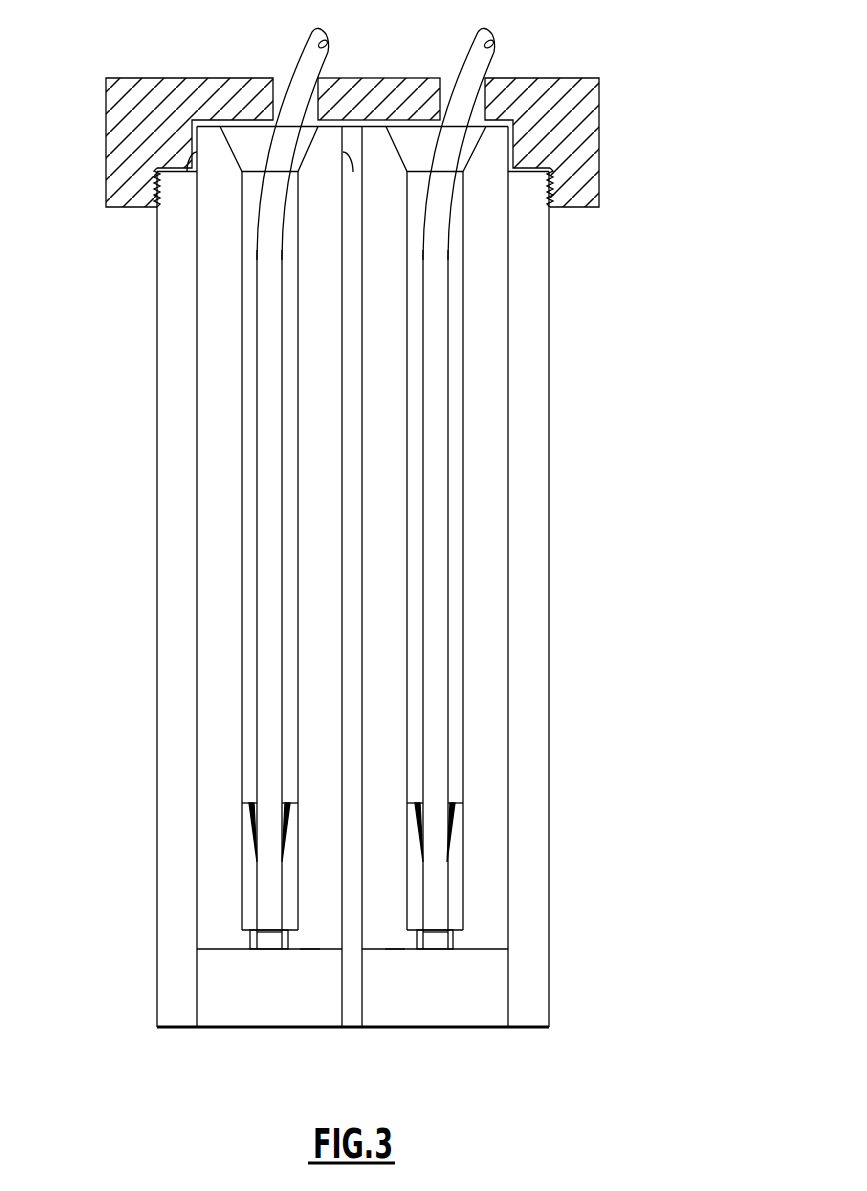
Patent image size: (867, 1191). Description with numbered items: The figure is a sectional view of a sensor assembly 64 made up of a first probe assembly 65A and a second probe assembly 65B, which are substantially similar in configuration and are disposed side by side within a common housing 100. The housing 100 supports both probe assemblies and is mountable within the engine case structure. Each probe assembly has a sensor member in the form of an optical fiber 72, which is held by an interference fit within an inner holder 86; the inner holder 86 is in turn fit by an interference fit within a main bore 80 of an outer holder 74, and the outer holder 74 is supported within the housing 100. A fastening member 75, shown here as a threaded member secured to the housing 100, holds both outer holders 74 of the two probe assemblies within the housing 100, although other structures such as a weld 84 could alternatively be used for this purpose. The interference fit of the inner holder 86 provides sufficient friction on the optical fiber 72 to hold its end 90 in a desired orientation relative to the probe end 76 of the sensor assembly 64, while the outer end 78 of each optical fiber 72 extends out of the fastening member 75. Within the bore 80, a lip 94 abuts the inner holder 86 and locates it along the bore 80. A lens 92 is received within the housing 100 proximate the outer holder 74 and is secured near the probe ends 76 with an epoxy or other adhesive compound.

The sensor assembly 64 is at (715, 250).
The first probe assembly 65A is at (508, 243).
The second probe assembly 65B is at (197, 293).
The optical fiber 72 is at (437, 303).
The outer holder 74 is at (488, 677).
The fastening member 75 is at (572, 117).
The probe end 76 is at (310, 962).
The outer end 78 is at (350, 45).
The main bore 80 is at (450, 570).
The weld 84 is at (188, 163).
The inner holder 86 is at (250, 878).
The end 90 is at (268, 944).
The lens 92 is at (227, 983).
The lip 94 is at (250, 940).
The housing 100 is at (530, 437).